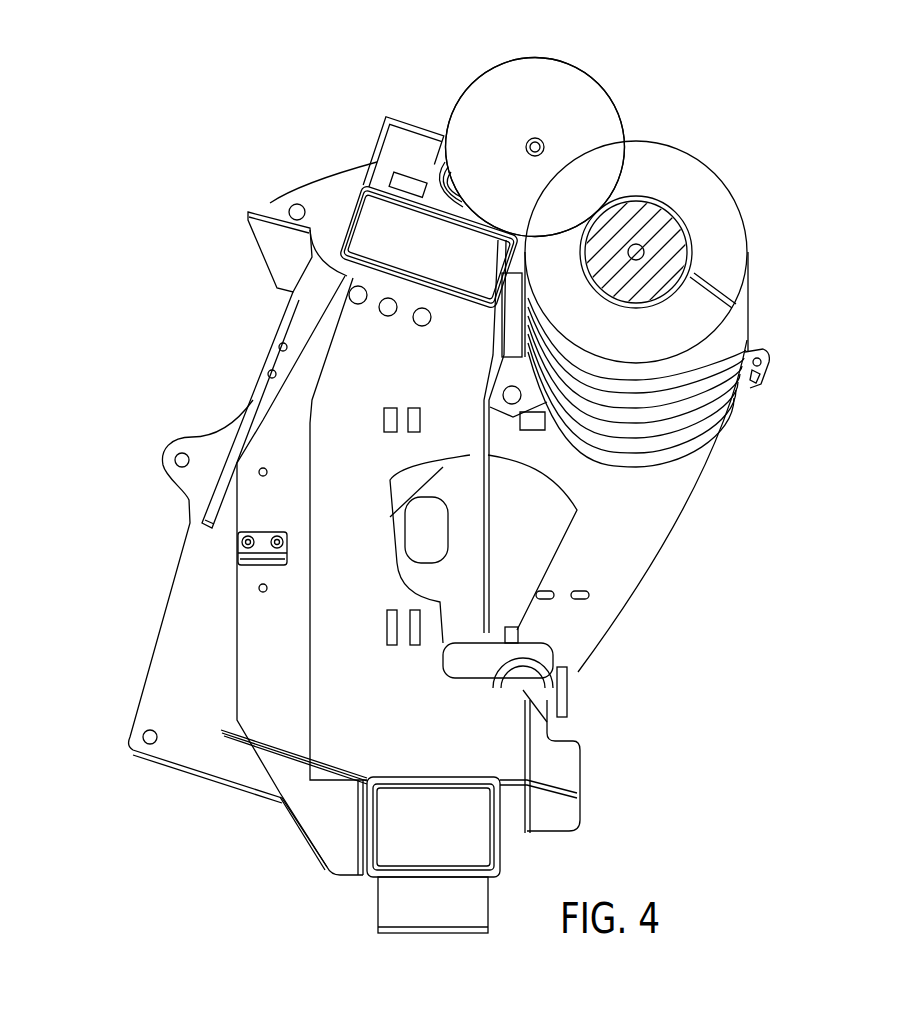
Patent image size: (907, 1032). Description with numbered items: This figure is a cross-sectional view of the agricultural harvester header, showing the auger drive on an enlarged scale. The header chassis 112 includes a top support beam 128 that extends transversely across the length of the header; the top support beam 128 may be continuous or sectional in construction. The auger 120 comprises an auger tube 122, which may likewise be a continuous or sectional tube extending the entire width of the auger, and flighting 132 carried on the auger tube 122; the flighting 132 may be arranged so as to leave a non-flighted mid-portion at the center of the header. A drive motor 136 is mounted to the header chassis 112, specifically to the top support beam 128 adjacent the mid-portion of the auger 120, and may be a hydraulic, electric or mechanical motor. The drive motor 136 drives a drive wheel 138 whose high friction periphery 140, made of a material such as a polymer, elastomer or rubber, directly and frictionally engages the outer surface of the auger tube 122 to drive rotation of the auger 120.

The header chassis 112 is at (296, 405).
The auger 120 is at (797, 248).
The auger tube 122 is at (714, 232).
The top support beam 128 is at (348, 277).
The flighting 132 is at (748, 277).
The drive motor 136 is at (416, 122).
The drive wheel 138 is at (570, 78).
The high friction periphery 140 is at (614, 97).